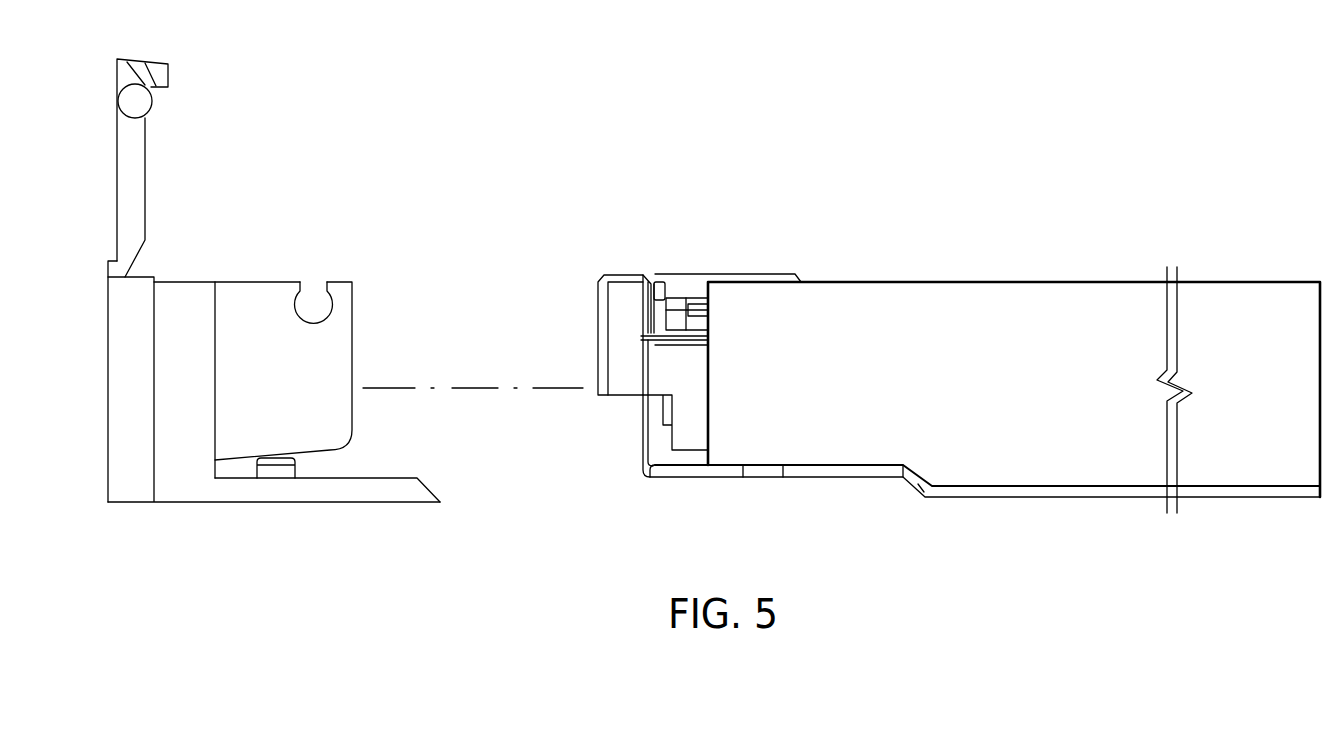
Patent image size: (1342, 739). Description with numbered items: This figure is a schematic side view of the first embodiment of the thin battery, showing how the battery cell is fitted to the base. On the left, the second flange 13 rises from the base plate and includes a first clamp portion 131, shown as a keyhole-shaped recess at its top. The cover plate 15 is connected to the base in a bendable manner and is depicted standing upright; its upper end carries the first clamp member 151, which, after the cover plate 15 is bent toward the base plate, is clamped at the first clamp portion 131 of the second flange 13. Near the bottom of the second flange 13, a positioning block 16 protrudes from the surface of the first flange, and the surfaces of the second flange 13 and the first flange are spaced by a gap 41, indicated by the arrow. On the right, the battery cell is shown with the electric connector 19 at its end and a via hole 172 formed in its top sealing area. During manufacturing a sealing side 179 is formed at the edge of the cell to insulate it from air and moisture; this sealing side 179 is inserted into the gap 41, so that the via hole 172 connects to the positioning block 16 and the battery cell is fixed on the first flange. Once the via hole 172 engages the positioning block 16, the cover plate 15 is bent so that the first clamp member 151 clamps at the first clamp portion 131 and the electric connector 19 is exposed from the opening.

The second flange 13 is at (258, 325).
The first clamp portion 131 is at (312, 266).
The cover plate 15 is at (130, 168).
The first clamp member 151 is at (133, 100).
The positioning block 16 is at (275, 470).
The electric connector 19 is at (688, 275).
The gap 41 is at (372, 465).
The via hole 172 is at (763, 451).
The sealing side 179 is at (818, 280).